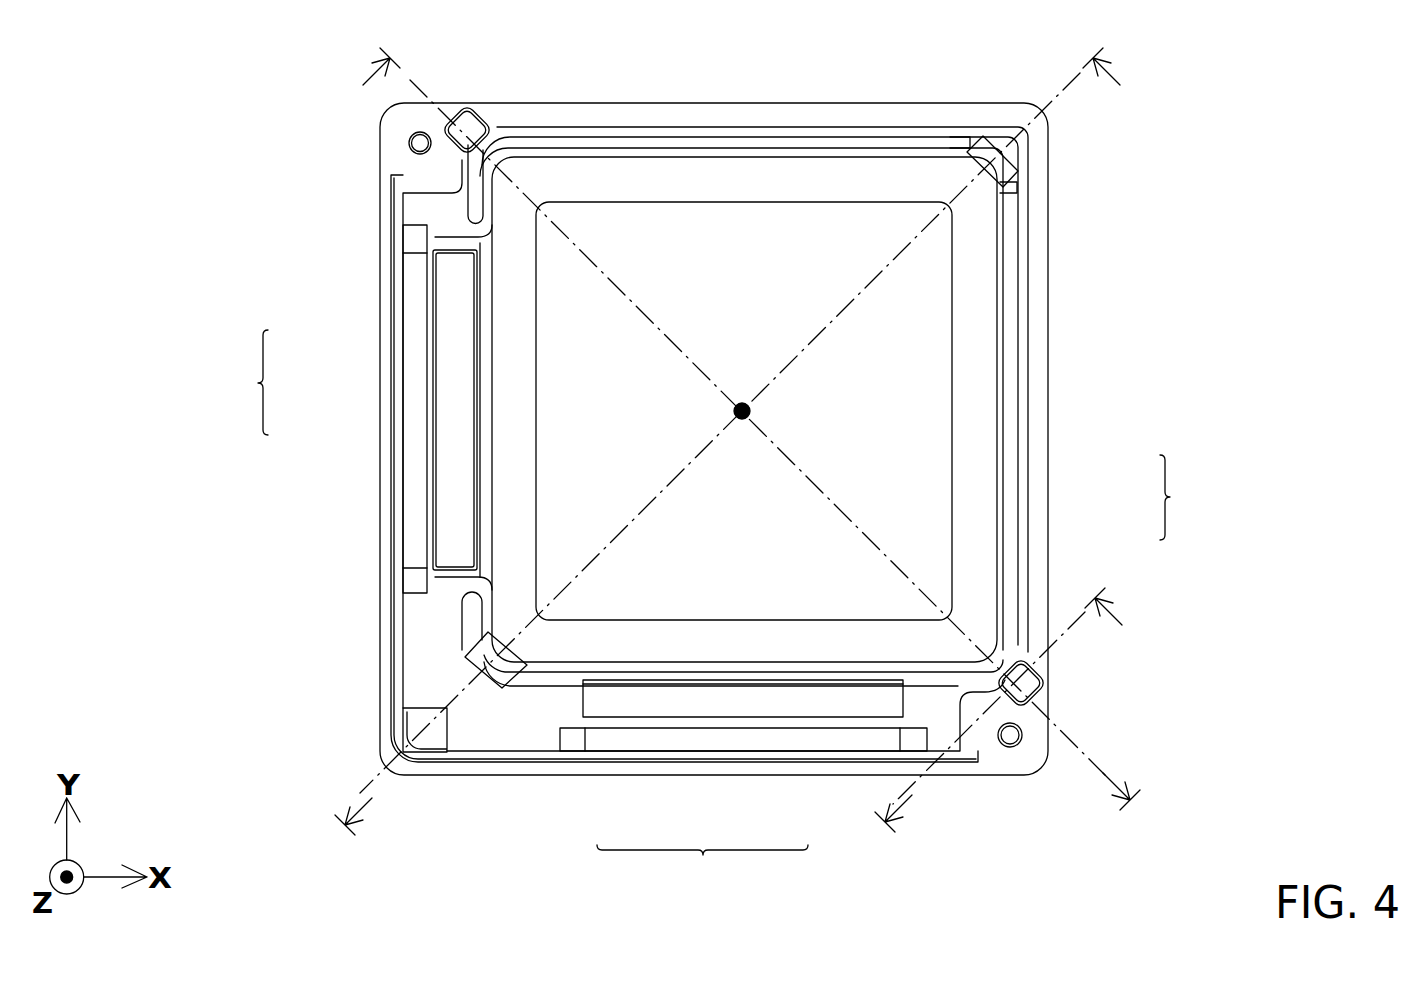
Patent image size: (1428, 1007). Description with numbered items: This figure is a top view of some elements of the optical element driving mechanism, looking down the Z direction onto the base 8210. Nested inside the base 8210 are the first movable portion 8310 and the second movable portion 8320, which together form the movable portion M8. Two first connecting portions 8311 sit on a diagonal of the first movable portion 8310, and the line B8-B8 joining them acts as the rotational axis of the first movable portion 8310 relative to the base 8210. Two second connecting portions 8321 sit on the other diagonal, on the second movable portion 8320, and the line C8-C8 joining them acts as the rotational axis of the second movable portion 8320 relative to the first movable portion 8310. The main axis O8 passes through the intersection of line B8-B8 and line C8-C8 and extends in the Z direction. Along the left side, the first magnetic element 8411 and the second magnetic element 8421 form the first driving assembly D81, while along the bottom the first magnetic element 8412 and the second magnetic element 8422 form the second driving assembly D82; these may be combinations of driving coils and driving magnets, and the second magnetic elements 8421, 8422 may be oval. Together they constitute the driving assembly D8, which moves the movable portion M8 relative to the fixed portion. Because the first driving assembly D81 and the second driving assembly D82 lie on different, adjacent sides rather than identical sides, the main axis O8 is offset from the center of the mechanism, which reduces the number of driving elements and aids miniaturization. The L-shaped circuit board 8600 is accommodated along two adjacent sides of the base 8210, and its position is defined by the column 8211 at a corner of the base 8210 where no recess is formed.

The base 8210 is at (1038, 336).
The column 8211 is at (415, 722).
The first movable portion 8310 is at (975, 470).
The second movable portion 8320 is at (1015, 515).
The first connecting portions 8311 is at (1012, 160).
The second connecting portions 8321 is at (470, 108).
The first magnetic element 8411 is at (450, 418).
The first magnetic element 8412 is at (630, 700).
The second magnetic element 8421 is at (415, 345).
The second magnetic element 8422 is at (772, 740).
The circuit board 8600 is at (398, 497).
The main axis O8 is at (767, 412).
The movable portion M8 is at (1189, 497).
The first driving assembly D81 is at (236, 382).
The second driving assembly D82 is at (702, 867).
The line B8- B8 is at (748, 460).
The line C8- C8 is at (733, 450).
The driving assembly D8 is at (1020, 730).